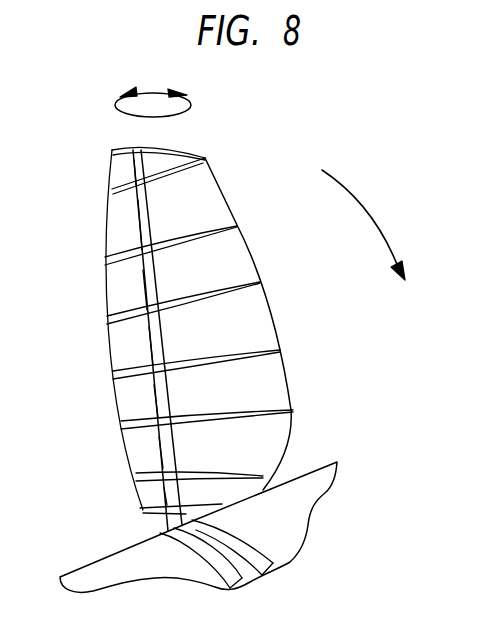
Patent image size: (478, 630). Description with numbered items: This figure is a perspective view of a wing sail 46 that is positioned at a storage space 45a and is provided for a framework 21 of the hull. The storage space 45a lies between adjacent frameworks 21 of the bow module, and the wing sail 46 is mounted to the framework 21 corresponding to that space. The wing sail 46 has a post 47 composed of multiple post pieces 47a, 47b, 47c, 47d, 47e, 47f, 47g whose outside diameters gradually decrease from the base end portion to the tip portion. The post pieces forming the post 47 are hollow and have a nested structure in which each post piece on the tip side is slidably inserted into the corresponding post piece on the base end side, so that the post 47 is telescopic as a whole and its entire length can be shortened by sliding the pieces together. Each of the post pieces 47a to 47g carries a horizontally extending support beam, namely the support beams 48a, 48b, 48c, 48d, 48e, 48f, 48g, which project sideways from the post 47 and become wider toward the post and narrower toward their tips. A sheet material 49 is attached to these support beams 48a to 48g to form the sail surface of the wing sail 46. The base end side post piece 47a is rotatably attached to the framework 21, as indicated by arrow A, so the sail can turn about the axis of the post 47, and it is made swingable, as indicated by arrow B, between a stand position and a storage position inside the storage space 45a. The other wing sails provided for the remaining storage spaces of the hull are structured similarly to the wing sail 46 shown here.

The rotation arrow A is at (200, 100).
The swing arrow B is at (372, 217).
The framework 21 is at (237, 540).
The storage space 45a is at (235, 558).
The wing sail 46 is at (252, 309).
The post 47 is at (113, 240).
The post piece 47a is at (170, 497).
The post piece 47b is at (160, 457).
The post piece 47c is at (153, 400).
The post piece 47d is at (153, 345).
The post piece 47e is at (147, 283).
The post piece 47f is at (140, 223).
The post piece 47g is at (135, 175).
The support beam 48a is at (217, 468).
The support beam 48b is at (213, 410).
The support beam 48c is at (213, 353).
The support beam 48d is at (200, 287).
The support beam 48e is at (183, 229).
The support beam 48f is at (163, 178).
The support beam 48g is at (172, 146).
The sheet material 49 is at (257, 437).